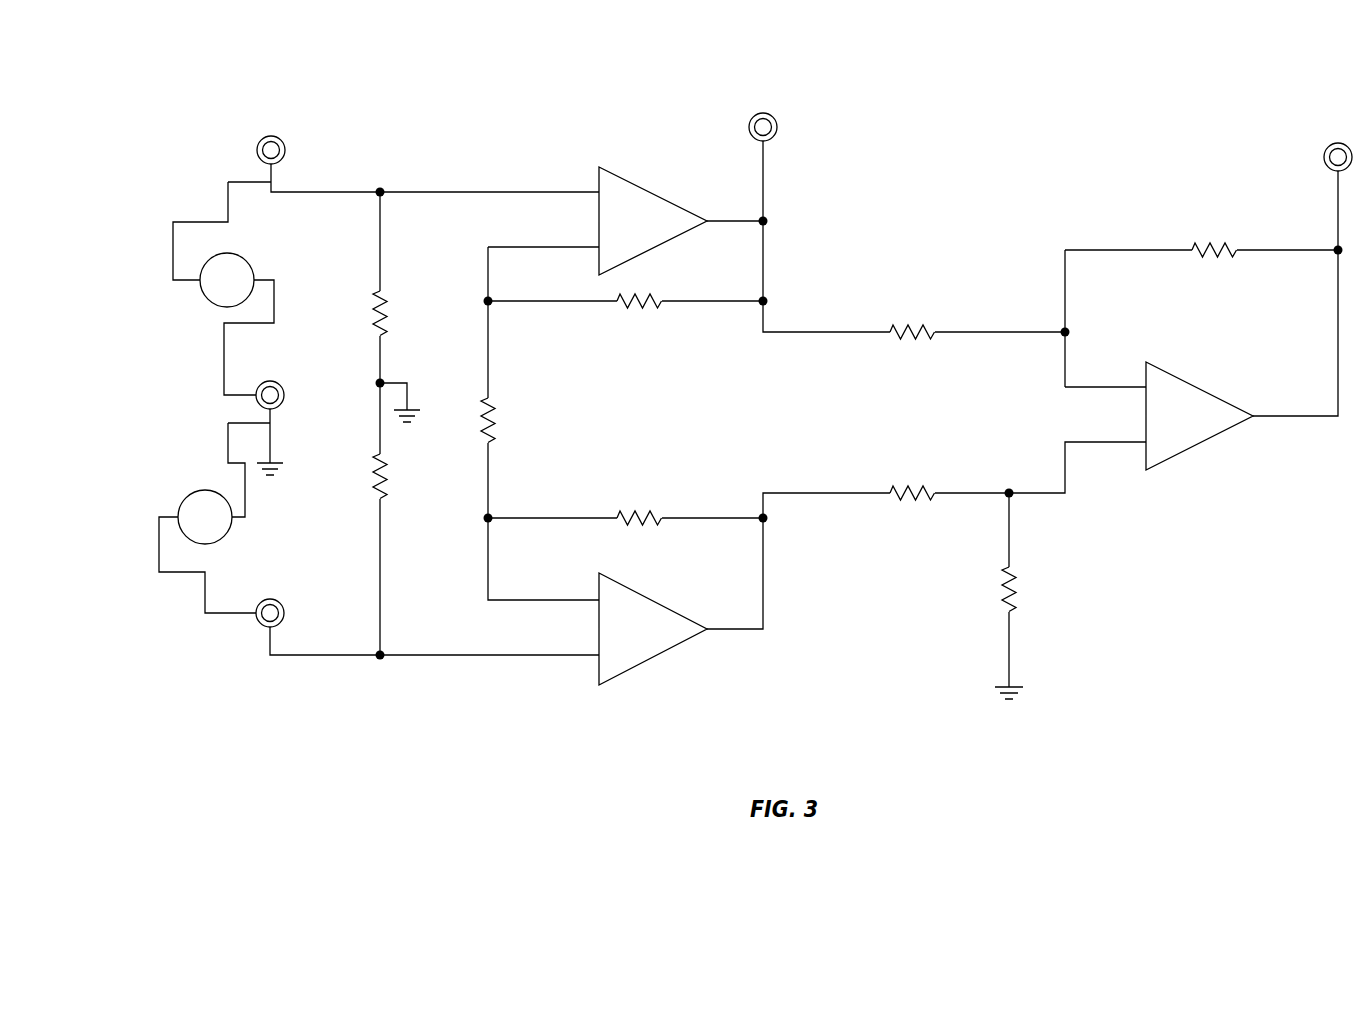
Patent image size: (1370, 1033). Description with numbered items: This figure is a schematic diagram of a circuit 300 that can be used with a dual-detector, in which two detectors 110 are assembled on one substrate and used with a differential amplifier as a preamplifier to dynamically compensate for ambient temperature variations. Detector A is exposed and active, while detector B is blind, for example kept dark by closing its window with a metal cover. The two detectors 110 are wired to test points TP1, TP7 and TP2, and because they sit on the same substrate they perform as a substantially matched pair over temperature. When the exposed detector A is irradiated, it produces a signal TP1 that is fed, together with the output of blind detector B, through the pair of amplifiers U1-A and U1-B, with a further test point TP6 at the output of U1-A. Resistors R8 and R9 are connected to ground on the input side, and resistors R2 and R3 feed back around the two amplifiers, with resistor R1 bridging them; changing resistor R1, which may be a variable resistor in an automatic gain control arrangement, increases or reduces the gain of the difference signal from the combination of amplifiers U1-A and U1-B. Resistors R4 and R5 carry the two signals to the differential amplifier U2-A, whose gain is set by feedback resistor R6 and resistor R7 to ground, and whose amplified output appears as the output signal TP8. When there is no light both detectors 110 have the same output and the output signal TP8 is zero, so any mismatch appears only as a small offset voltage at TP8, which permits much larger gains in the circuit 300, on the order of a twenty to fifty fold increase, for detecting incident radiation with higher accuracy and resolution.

The circuit 300 is at (252, 64).
The detectors 110 is at (222, 254).
The signal TP1 is at (270, 140).
The test point 2 TP2 is at (269, 601).
The test point 6 TP6 is at (763, 116).
The test point 7 TP7 is at (269, 383).
The output signal TP8 is at (1337, 145).
The resistor R1 is at (473, 423).
The resistor R2 is at (626, 313).
The resistor R3 is at (626, 529).
The resistor R4 is at (910, 343).
The resistor R5 is at (909, 504).
The resistor R6 is at (1208, 261).
The resistor R7 is at (993, 589).
The resistor R8 is at (368, 314).
The resistor R9 is at (368, 482).
The amplifier U1-A is at (658, 222).
The amplifier U1-B is at (667, 629).
The differential amplifier U2-A is at (1215, 415).